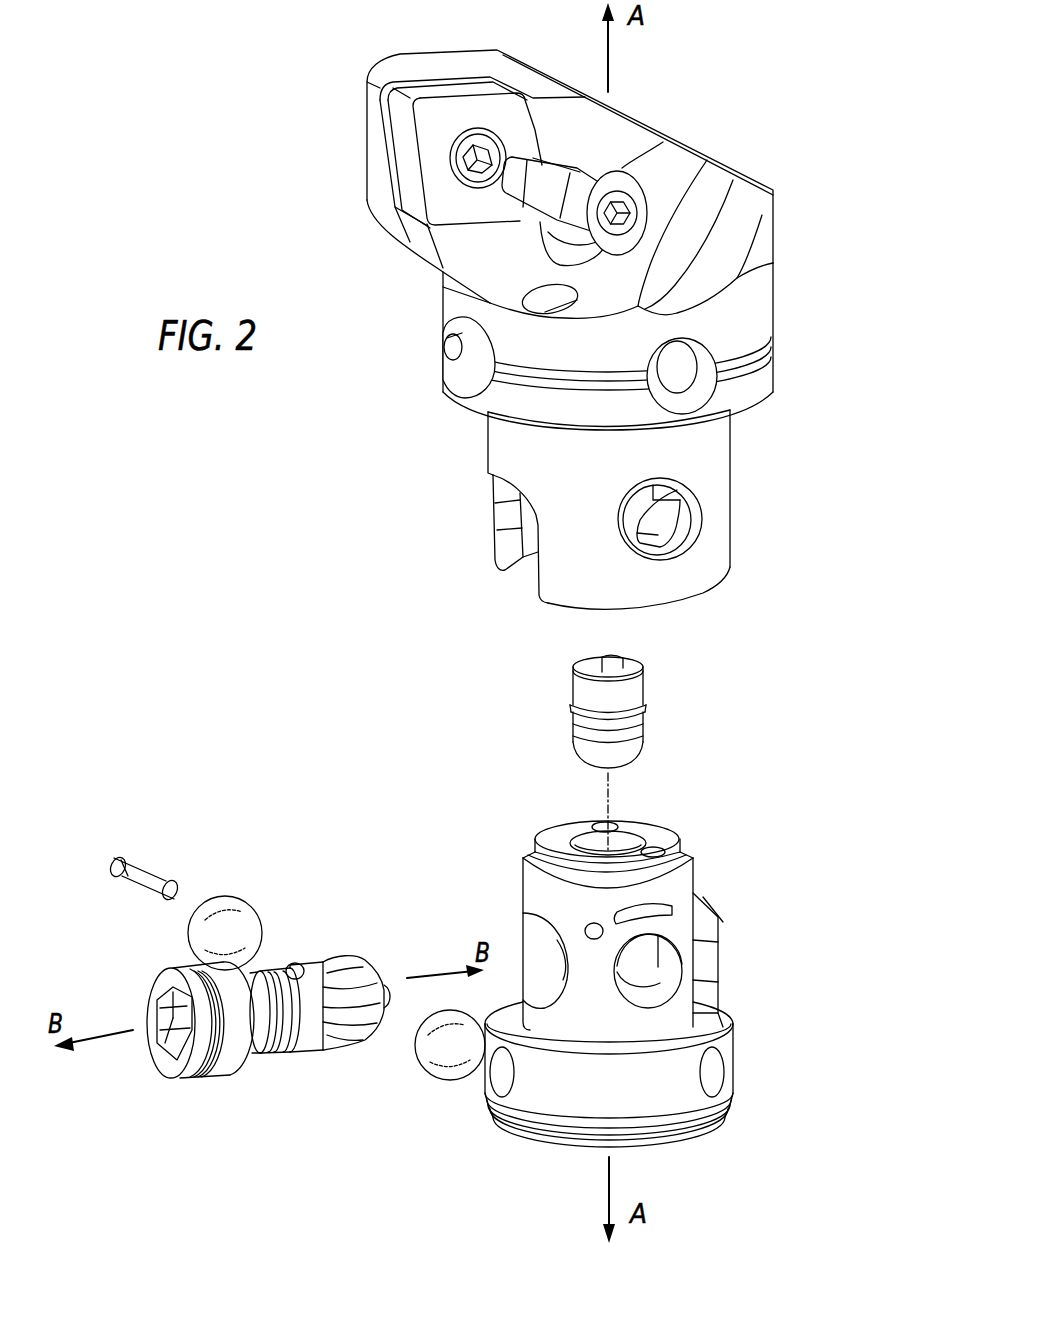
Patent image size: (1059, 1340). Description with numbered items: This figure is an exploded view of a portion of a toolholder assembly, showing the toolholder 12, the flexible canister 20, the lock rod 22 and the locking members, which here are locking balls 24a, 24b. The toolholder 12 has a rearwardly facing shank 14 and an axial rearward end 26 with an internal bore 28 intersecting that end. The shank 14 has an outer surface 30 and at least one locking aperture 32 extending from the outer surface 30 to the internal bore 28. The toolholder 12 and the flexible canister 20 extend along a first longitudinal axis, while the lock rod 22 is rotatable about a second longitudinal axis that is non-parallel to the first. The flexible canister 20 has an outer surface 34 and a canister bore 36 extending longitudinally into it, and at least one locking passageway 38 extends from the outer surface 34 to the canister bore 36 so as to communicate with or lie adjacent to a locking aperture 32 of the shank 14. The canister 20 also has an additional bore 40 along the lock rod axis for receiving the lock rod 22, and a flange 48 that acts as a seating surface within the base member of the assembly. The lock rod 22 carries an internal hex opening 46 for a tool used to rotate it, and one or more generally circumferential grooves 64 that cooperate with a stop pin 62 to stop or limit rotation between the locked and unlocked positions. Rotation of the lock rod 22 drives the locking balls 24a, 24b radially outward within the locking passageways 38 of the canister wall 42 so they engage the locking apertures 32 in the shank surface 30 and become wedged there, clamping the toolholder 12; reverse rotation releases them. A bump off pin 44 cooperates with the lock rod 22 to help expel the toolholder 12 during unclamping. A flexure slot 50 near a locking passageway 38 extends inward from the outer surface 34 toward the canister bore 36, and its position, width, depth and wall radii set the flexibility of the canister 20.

The toolholder 12 is at (620, 329).
The shank 14 is at (738, 453).
The flexible canister 20 is at (642, 966).
The lock rod 22 is at (255, 1013).
The locking ball 24a is at (225, 898).
The locking ball 24b is at (427, 1052).
The axial rearward end 26 is at (731, 548).
The internal bore 28 is at (515, 578).
The outer surface 30 is at (517, 450).
The locking aperture 32 is at (688, 507).
The outer surface 34 is at (678, 890).
The canister bore 36 is at (627, 842).
The locking passageway 38 is at (648, 968).
The additional bore 40 is at (535, 937).
The canister wall 42 is at (663, 1022).
The bump off pin 44 is at (640, 742).
The internal hex opening 46 is at (168, 995).
The flange 48 is at (676, 1093).
The slot 50 is at (684, 913).
The stop pin 62 is at (144, 872).
The groove 64 is at (298, 966).